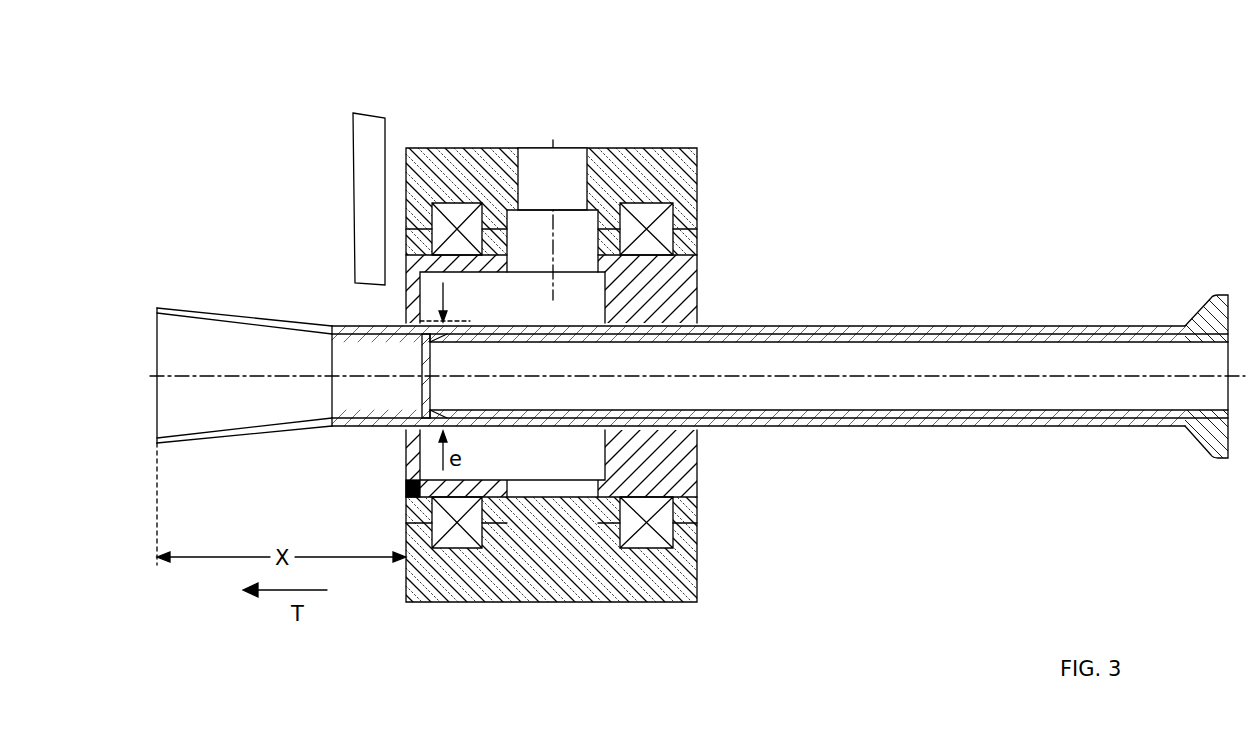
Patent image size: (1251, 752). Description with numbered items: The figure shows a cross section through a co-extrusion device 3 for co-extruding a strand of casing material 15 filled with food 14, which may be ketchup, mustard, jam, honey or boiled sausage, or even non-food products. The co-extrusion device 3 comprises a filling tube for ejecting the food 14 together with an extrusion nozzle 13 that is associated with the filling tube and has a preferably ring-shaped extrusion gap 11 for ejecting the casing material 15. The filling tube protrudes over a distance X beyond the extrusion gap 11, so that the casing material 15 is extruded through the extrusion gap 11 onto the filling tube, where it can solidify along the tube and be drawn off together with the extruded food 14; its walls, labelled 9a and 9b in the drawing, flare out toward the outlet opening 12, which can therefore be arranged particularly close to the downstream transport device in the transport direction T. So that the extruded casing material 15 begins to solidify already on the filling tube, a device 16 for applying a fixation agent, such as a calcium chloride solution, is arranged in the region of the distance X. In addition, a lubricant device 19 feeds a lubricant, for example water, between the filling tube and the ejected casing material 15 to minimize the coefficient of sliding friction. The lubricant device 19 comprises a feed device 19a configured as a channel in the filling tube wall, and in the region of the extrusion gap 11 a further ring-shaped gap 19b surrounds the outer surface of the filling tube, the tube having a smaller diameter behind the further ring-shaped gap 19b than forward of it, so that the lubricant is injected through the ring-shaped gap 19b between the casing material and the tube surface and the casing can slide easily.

The co-extrusion device 3 is at (769, 124).
The lower wall of horn 9a is at (346, 425).
The upper wall of horn 9b is at (208, 312).
The extrusion gap 11 is at (393, 314).
The outlet opening 12 is at (157, 393).
The extrusion nozzle 13 is at (408, 490).
The food 14 is at (199, 432).
The casing material 15 is at (530, 311).
The device for applying a fixation agent 16 is at (371, 113).
The lubricant device 19 is at (965, 321).
The feed device 19a is at (781, 326).
The further ring-shaped gap 19b is at (392, 327).